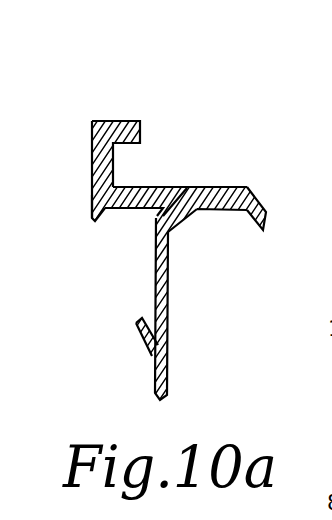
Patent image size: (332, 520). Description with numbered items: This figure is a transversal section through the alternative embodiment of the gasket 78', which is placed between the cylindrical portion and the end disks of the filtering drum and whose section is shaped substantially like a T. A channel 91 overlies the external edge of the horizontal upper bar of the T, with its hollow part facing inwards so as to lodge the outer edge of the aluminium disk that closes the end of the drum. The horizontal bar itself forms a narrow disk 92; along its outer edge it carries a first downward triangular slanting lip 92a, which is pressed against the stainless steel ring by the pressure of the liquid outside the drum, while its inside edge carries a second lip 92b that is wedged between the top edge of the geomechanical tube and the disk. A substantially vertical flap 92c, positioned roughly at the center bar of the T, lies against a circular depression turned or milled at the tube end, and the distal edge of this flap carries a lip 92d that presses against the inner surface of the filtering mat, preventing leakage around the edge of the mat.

The gasket 78' is at (236, 121).
The channel 91 is at (123, 168).
The narrow disk 92 is at (196, 186).
The first downward triangular slanting lip 92a is at (96, 220).
The second lip 92b is at (268, 228).
The substantially vertical flap 92c is at (168, 293).
The lip 92d is at (143, 348).